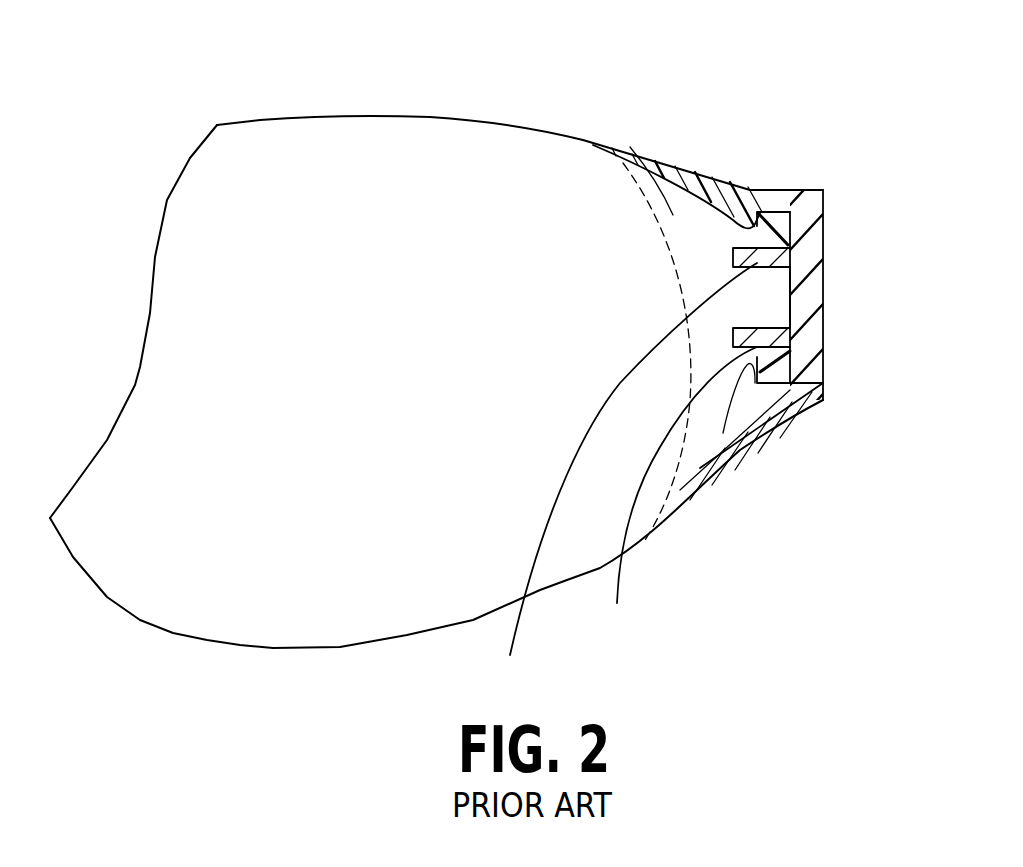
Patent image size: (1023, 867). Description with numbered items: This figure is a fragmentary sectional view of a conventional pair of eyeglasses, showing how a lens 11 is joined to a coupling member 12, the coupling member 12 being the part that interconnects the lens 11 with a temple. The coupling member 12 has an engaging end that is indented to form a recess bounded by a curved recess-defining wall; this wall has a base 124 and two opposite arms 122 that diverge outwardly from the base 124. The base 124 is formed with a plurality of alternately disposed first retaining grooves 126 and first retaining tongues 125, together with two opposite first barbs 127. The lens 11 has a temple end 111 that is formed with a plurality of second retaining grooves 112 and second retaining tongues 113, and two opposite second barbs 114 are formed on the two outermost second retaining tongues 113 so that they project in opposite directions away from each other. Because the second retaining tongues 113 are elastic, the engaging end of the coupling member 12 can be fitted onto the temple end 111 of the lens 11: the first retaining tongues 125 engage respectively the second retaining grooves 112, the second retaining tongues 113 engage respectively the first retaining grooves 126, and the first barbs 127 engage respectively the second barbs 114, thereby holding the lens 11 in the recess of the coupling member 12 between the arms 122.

The lens 11 is at (440, 177).
The temple end 111 is at (630, 147).
The second retaining groove 112 is at (621, 419).
The second retaining tongue 113 is at (757, 292).
The second barb 114 is at (763, 220).
The coupling member 12 is at (838, 227).
The arm 122 is at (747, 457).
The base 124 is at (827, 383).
The first retaining tongue 125 is at (795, 258).
The first retaining groove 126 is at (797, 307).
The first barb 127 is at (710, 207).